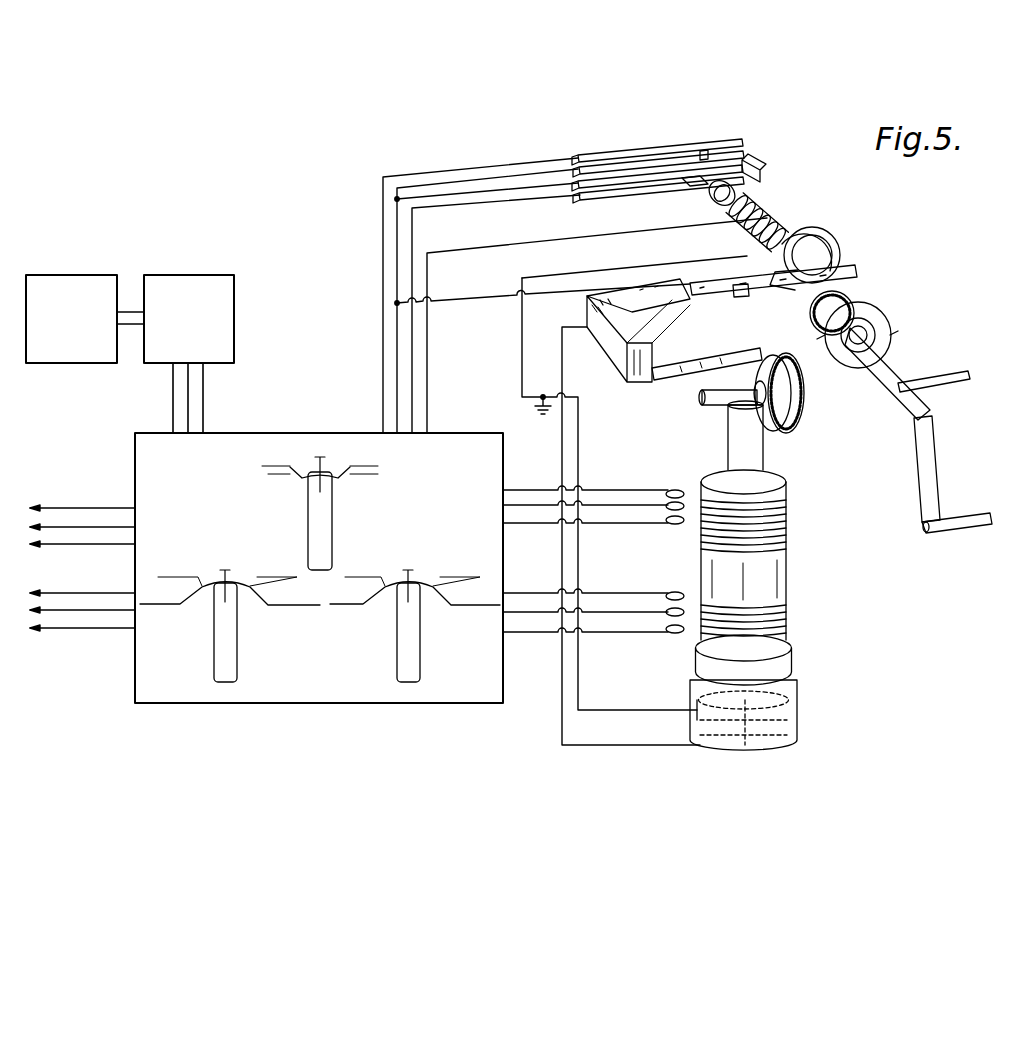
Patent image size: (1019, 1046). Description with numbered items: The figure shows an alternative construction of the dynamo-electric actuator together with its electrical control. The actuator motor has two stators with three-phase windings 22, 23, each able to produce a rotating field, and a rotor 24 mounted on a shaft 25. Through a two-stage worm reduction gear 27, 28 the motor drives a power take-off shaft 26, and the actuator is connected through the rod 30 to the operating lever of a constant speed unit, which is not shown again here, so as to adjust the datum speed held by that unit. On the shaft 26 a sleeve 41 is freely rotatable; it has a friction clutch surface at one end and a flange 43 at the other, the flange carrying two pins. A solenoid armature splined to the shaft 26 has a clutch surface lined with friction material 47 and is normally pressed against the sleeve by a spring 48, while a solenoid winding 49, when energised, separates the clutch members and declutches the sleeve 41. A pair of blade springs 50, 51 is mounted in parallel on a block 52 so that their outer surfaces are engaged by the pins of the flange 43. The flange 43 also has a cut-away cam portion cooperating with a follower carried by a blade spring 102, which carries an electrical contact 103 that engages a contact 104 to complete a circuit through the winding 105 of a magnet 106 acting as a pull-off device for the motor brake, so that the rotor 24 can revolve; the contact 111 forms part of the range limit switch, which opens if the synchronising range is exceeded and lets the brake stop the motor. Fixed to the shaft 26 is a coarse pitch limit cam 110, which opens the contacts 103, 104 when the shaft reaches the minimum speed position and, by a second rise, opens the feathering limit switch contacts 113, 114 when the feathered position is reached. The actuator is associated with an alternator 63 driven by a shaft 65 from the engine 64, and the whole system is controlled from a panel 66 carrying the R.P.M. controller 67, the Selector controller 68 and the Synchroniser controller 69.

The three-phase winding 22 is at (672, 626).
The three-phase winding 23 is at (672, 524).
The rotor 24 is at (790, 566).
The shaft 25 is at (728, 432).
The power take-off shaft 26 is at (886, 401).
The worm reduction gear 27 is at (793, 428).
The worm reduction gear 28 is at (893, 335).
The rod 30 is at (942, 532).
The sleeve 41 is at (772, 268).
The flange 43 is at (865, 289).
The friction material 47 is at (814, 248).
The spring 48 is at (752, 197).
The solenoid winding 49 is at (777, 227).
The blade spring 50 is at (673, 370).
The blade spring 51 is at (627, 296).
The block 52 is at (607, 338).
The alternator 63 is at (213, 334).
The engine 64 is at (50, 350).
The shaft 65 is at (135, 320).
The panel 66 is at (292, 432).
The controller 67 is at (238, 648).
The controller 68 is at (396, 656).
The controller 69 is at (333, 518).
The blade spring 102 is at (852, 280).
The electrical contact 103 is at (668, 188).
The contact 104 is at (680, 190).
The winding 105 is at (790, 738).
The magnet 106 is at (690, 731).
The coarse pitch limit cam 110 is at (748, 173).
The contact 111 is at (757, 300).
The contact 113 is at (660, 160).
The contact 114 is at (690, 160).